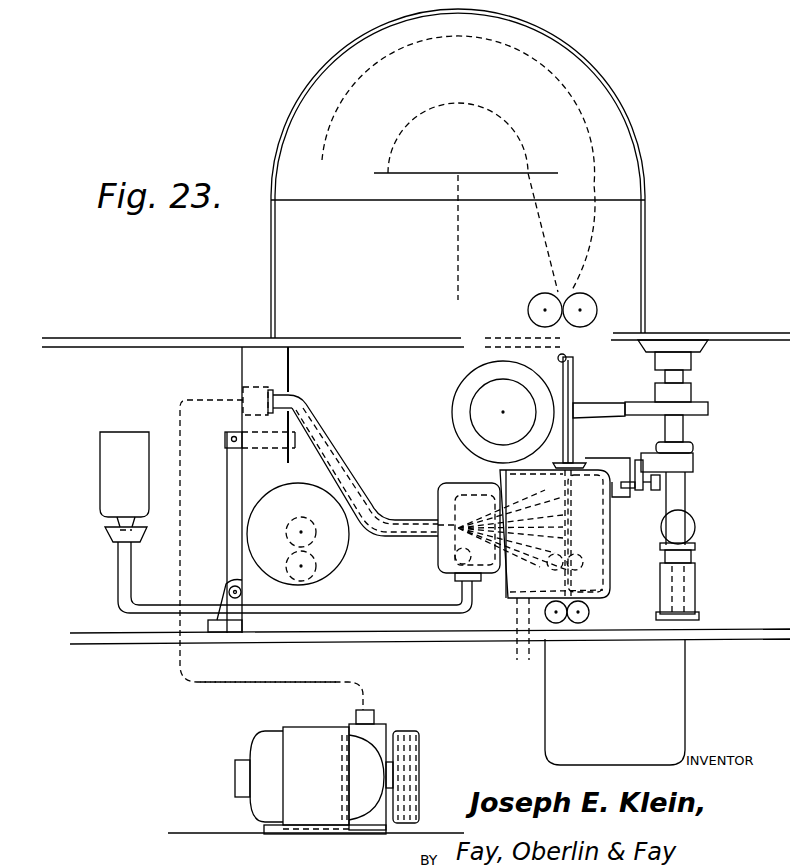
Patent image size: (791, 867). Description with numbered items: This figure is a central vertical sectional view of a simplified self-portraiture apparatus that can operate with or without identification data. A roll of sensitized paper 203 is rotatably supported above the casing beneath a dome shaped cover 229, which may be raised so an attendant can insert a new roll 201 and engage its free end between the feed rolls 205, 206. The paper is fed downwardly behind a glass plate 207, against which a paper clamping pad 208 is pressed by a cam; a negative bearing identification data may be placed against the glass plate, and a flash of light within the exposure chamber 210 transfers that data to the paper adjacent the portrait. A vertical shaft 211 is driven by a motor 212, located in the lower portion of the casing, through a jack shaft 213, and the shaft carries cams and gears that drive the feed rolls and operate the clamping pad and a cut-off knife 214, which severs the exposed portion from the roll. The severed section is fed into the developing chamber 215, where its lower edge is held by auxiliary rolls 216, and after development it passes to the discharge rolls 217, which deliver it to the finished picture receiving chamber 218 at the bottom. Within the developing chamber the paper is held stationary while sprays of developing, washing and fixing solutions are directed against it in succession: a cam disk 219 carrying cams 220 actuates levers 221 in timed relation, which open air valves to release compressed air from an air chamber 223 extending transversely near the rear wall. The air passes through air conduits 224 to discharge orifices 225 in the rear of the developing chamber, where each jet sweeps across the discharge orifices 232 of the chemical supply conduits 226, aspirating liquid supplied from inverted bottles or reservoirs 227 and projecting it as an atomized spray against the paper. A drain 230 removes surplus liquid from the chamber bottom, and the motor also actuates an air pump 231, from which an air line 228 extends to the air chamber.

The film strip 201 is at (556, 78).
The roll of sensitized paper 203 is at (402, 130).
The feed roll 205 is at (586, 295).
The feed roll 206 is at (541, 295).
The glass plate 207 is at (563, 355).
The paper clamping pad 208 is at (575, 373).
The exposure chamber 210 is at (519, 330).
The vertical shaft 211 is at (686, 428).
The motor 212 is at (595, 573).
The jack shaft 213 is at (681, 521).
The cut-off knife 214 is at (710, 402).
The developing chamber 215 is at (590, 513).
The auxiliary rolls 216 is at (243, 418).
The discharge rolls 217 is at (586, 610).
The finished picture receiving chamber 218 is at (675, 689).
The cam disk 219 is at (316, 484).
The cams 220 is at (264, 572).
The levers 221 is at (232, 486).
The air chamber 223 is at (258, 440).
The air conduits 224 is at (352, 471).
The discharge orifices 225 is at (467, 484).
The chemical supply conduits 226 is at (384, 606).
The inverted bottles or reservoirs 227 is at (105, 460).
The air line 228 is at (318, 683).
The dome shaped cover 229 is at (625, 110).
The drain 230 is at (517, 649).
The air pump 231 is at (381, 728).
The discharge orifices 232 is at (437, 553).